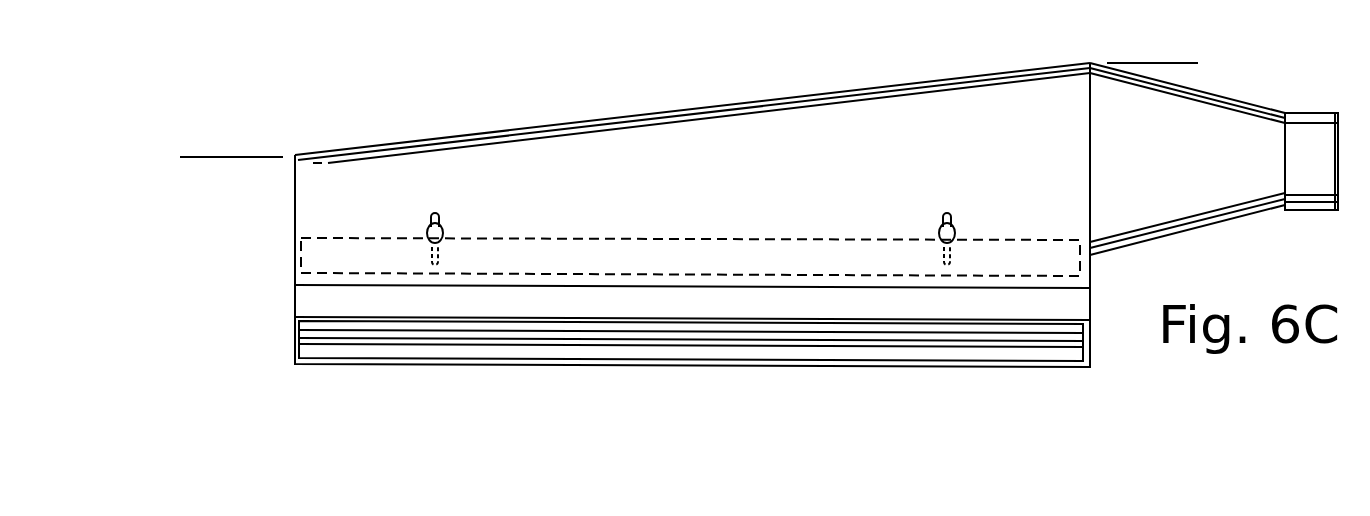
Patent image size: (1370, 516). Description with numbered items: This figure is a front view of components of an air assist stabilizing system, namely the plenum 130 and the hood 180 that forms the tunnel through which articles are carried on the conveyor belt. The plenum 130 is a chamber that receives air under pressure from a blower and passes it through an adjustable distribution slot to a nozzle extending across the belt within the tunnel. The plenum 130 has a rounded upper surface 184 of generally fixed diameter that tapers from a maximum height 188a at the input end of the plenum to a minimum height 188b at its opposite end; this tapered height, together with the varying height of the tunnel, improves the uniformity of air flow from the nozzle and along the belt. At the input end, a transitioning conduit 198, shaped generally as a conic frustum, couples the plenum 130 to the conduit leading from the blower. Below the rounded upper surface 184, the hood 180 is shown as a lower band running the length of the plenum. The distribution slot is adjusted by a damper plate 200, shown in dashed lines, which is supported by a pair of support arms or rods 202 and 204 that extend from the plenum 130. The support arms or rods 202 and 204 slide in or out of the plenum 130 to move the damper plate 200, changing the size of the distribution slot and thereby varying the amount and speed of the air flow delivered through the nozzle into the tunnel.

The plenum 130 is at (552, 172).
The hood 180 is at (340, 298).
The rounded upper surface 184 is at (615, 117).
The maximum height 188a is at (1158, 63).
The minimum height 188b is at (243, 157).
The transitioning conduit 198 is at (1230, 100).
The damper plate 200 is at (757, 250).
The support arm or rod 202 is at (438, 215).
The support arm or rod 204 is at (945, 215).